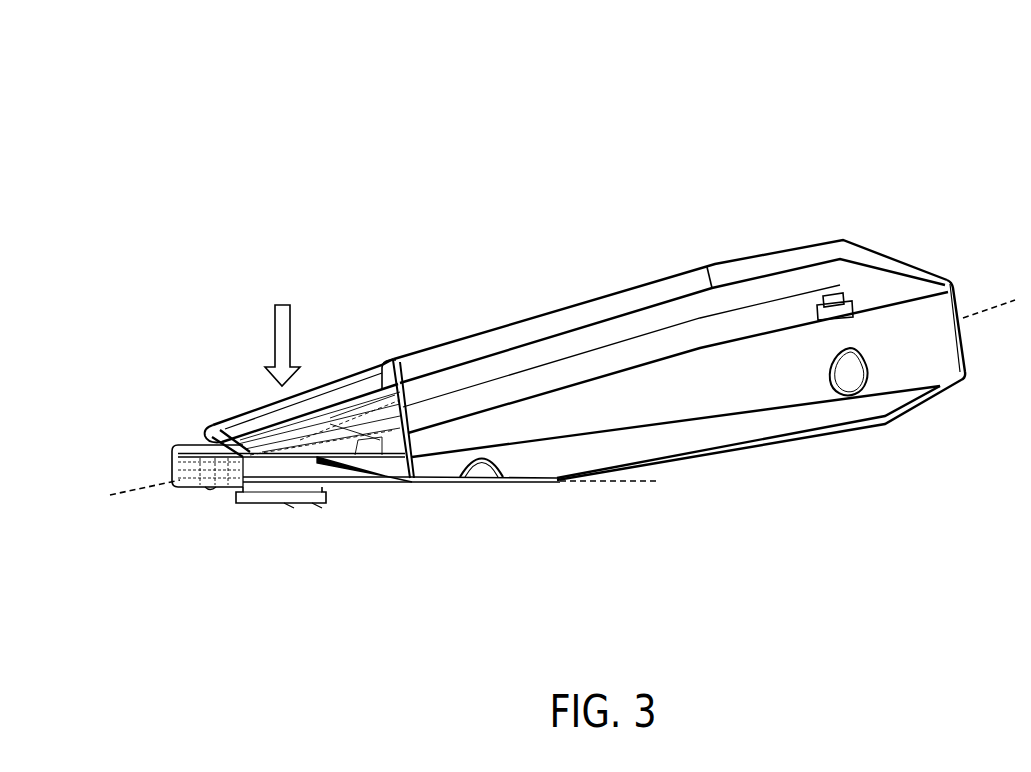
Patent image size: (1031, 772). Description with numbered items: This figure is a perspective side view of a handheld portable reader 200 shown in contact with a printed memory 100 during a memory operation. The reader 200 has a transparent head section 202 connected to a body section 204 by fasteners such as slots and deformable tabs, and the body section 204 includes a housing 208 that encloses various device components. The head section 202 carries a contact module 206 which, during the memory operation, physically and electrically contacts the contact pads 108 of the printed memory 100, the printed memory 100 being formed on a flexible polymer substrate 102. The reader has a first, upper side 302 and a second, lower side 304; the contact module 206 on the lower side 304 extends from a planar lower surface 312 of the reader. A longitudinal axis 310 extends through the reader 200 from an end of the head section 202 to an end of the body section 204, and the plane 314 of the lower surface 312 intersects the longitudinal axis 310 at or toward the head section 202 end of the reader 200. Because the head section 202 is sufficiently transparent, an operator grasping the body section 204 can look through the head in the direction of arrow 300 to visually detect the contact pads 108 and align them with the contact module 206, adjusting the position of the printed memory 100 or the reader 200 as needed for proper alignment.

The reader 200 is at (121, 116).
The head section 202 is at (359, 189).
The body section 204 is at (373, 189).
The printed memory 100 is at (221, 502).
The substrate 102 is at (246, 501).
The contact pad 108 is at (317, 499).
The contact module 206 is at (321, 488).
The housing 208 is at (899, 284).
The arrow 300 is at (276, 332).
The first side 302 is at (511, 302).
The second side 304 is at (666, 514).
The longitudinal axis 310 is at (143, 487).
The planar lower surface 312 is at (391, 488).
The plane 314 is at (619, 483).